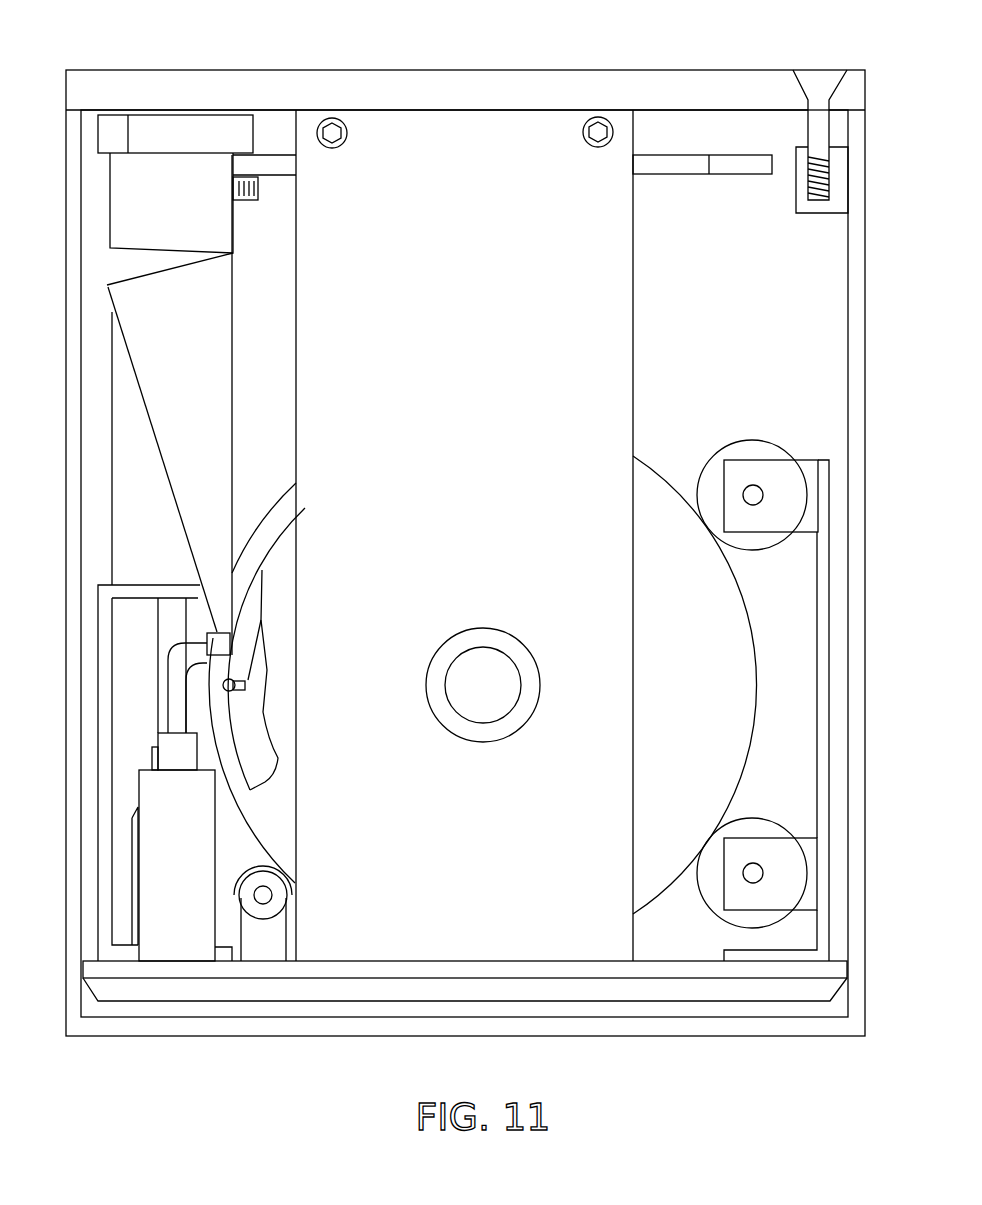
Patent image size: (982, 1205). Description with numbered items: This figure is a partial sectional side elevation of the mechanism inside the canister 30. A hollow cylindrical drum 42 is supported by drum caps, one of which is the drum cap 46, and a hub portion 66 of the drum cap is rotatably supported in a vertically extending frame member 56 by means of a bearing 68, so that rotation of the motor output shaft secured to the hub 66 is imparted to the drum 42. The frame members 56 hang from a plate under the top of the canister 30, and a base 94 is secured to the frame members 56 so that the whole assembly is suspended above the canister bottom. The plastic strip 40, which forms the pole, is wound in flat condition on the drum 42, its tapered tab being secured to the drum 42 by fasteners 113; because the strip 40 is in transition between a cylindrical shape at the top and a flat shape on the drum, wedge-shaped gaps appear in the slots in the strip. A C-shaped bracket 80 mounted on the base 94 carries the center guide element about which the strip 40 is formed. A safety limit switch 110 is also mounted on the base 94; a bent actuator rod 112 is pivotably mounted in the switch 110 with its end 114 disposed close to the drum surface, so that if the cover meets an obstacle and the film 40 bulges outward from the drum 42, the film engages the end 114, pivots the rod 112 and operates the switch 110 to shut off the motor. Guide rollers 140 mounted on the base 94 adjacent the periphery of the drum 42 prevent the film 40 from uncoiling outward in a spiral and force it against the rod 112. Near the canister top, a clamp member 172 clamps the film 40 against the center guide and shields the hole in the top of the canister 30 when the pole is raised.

The canister 30 is at (855, 327).
The plastic strip 40 is at (213, 362).
The hollow cylindrical drum 42 is at (288, 525).
The drum cap 46 is at (178, 252).
The frame member 56 is at (615, 318).
The hub portion 66 is at (518, 663).
The bearing 68 is at (490, 635).
The C-shaped bracket 80 is at (108, 703).
The base 94 is at (240, 968).
The safety limit switch 110 is at (192, 821).
The bent actuator rod 112 is at (177, 708).
The fasteners 113 is at (242, 685).
The end of actuator rod 114 is at (206, 653).
The guide rollers 140 is at (747, 447).
The clamp member 172 is at (232, 126).